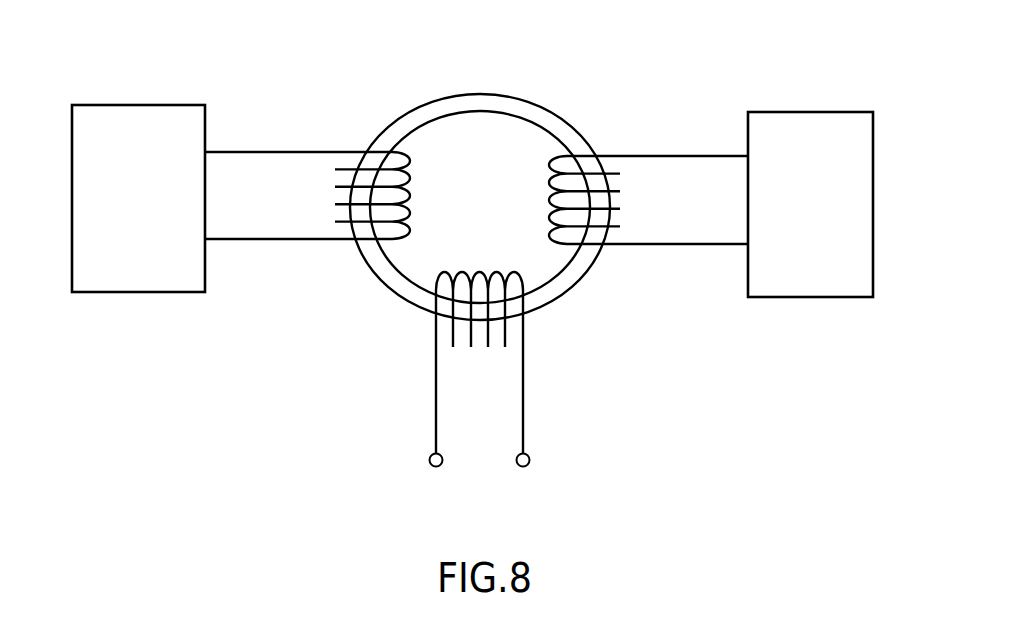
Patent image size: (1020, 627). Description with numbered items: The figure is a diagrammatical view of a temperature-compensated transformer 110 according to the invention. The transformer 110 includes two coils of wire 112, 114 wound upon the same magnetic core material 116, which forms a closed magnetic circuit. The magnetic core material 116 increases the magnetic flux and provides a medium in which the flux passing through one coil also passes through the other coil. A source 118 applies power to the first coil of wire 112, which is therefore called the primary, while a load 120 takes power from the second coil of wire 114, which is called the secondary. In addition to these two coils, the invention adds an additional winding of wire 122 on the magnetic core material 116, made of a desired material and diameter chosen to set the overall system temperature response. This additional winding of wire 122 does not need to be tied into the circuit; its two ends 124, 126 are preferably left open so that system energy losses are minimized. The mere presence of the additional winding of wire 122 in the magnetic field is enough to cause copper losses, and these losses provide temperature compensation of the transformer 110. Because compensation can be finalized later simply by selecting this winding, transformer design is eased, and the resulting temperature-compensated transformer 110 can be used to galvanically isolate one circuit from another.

The transformer 110 is at (583, 90).
The coil of wire 112 is at (297, 148).
The coil of wire 114 is at (628, 155).
The magnetic core material 116 is at (425, 112).
The source 118 is at (118, 105).
The load 120 is at (803, 112).
The additional winding of wire 122 is at (520, 393).
The end of additional winding 124 is at (430, 457).
The end of additional winding 126 is at (530, 458).